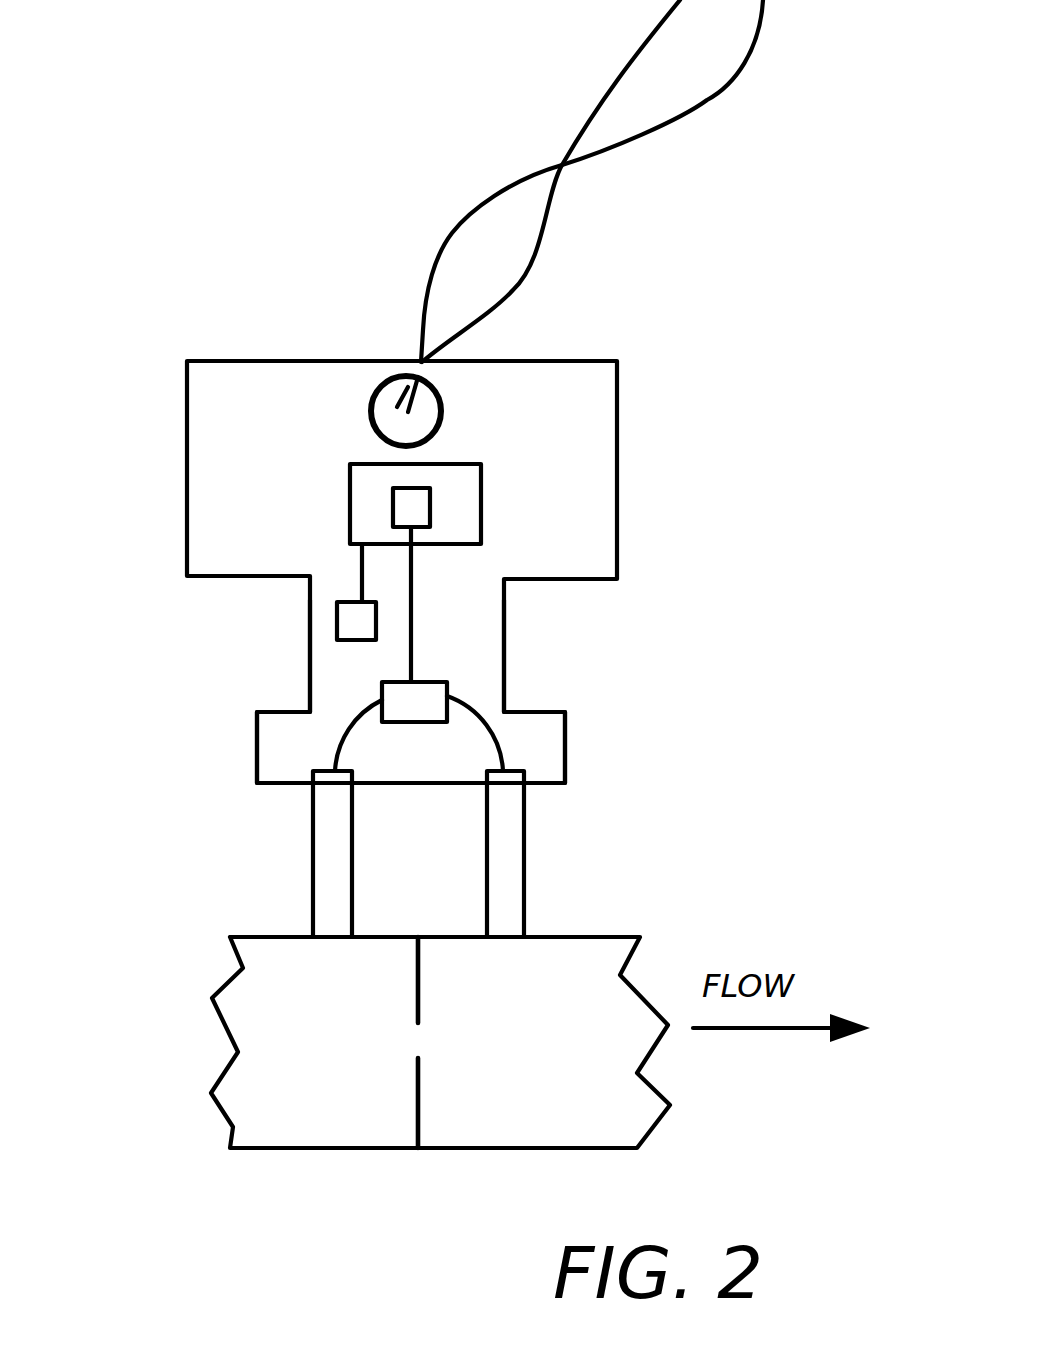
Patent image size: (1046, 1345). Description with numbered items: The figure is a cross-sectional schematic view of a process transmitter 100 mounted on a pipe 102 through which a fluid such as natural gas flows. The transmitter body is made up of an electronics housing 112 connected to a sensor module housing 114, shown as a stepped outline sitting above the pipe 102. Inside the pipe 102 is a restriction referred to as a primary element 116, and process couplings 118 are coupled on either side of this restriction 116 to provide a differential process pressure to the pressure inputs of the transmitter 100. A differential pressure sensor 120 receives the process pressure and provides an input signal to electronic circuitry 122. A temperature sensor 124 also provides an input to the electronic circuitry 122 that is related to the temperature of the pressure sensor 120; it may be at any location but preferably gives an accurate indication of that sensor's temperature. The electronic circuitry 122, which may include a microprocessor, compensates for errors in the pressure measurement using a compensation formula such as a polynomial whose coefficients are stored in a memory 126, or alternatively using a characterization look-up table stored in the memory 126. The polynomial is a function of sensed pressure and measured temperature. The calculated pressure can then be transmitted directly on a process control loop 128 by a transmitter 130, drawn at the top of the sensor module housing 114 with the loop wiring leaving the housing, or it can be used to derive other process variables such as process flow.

The process transmitter 100 is at (200, 317).
The pipe 102 is at (230, 1148).
The electronics housing 112 is at (504, 633).
The sensor module housing 114 is at (220, 438).
The primary element 116 is at (418, 1087).
The process couplings 118 is at (325, 850).
The differential pressure sensor 120 is at (382, 693).
The electronic circuitry 122 is at (482, 495).
The temperature sensor 124 is at (337, 632).
The memory 126 is at (393, 516).
The process control loop 128 is at (547, 213).
The transmitter 130 is at (378, 393).